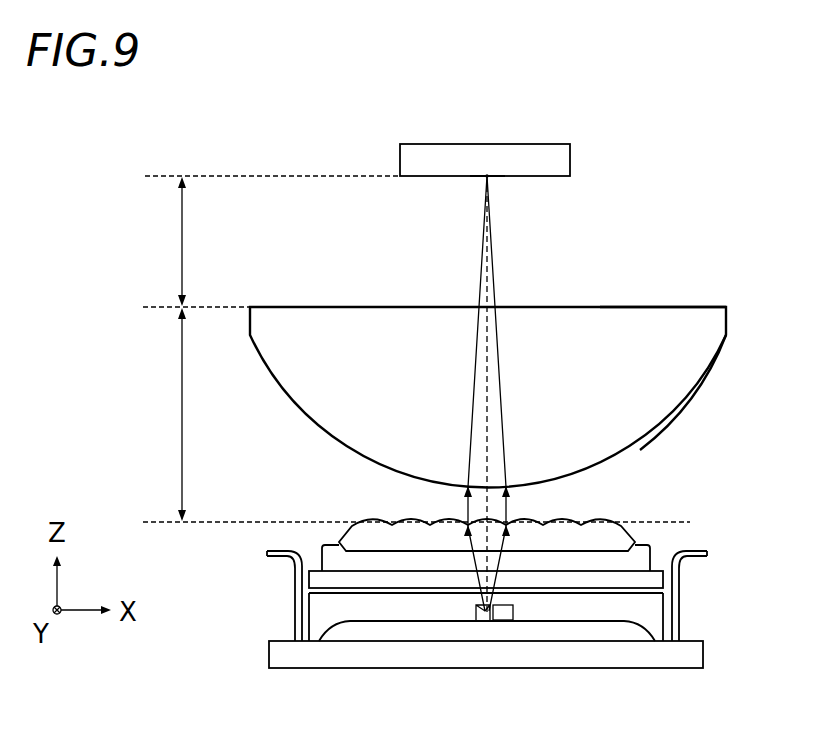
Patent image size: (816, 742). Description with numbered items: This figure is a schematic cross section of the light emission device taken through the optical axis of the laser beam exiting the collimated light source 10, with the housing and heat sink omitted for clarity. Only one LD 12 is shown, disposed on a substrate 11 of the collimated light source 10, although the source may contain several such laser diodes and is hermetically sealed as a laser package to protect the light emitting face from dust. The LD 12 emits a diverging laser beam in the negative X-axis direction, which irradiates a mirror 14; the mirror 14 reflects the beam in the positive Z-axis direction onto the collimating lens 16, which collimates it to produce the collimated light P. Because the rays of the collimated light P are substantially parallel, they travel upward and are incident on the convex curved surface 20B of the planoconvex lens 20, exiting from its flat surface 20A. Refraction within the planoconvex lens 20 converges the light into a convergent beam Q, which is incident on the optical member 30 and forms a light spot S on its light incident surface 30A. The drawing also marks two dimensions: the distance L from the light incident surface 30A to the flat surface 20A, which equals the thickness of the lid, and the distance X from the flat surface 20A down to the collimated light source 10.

The collimated light source 10 is at (658, 535).
The substrate 11 is at (693, 662).
The LD 12 is at (513, 608).
The mirror 14 is at (482, 621).
The collimating lens 16 is at (534, 523).
The planoconvex lens 20 is at (270, 372).
The flat surface 20A is at (688, 301).
The convex curved surface 20B is at (689, 410).
The optical member 30 is at (570, 162).
The light incident surface 30A is at (506, 184).
The light spot S is at (478, 182).
The collimated light P is at (465, 505).
The convergent beam Q is at (495, 262).
The distance L is at (165, 241).
The distance X is at (168, 414).